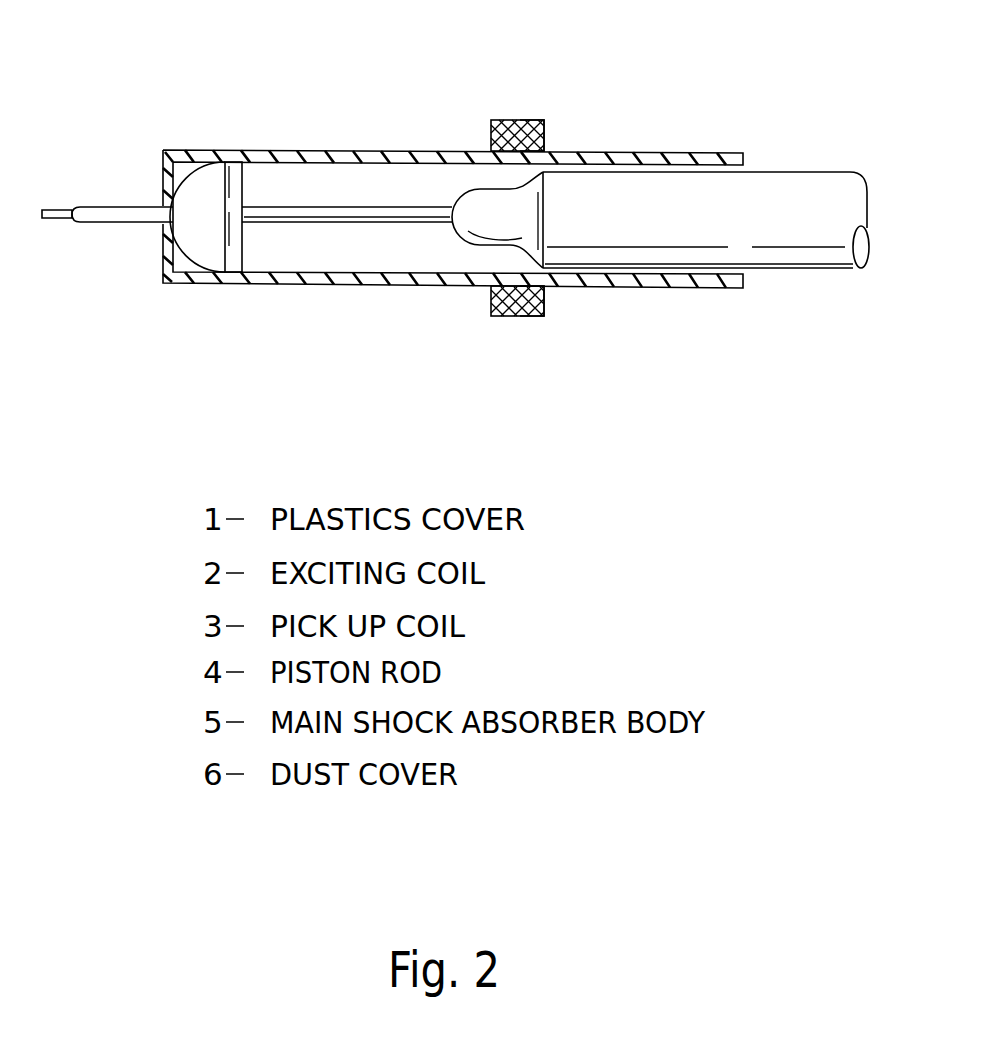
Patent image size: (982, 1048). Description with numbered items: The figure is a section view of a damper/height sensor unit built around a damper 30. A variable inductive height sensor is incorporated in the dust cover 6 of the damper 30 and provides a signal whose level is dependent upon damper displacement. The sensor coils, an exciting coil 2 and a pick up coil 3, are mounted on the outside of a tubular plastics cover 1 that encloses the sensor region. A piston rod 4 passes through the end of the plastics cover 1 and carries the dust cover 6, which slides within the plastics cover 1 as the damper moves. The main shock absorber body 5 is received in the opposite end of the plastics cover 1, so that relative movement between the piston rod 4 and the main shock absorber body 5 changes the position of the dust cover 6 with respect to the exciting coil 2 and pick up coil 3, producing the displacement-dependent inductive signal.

The plastics cover 1 is at (164, 152).
The exciting coil 2 is at (491, 140).
The pick up coil 3 is at (544, 128).
The piston rod 4 is at (102, 226).
The main shock absorber body 5 is at (803, 245).
The dust cover 6 is at (209, 246).
The damper 30 is at (758, 124).